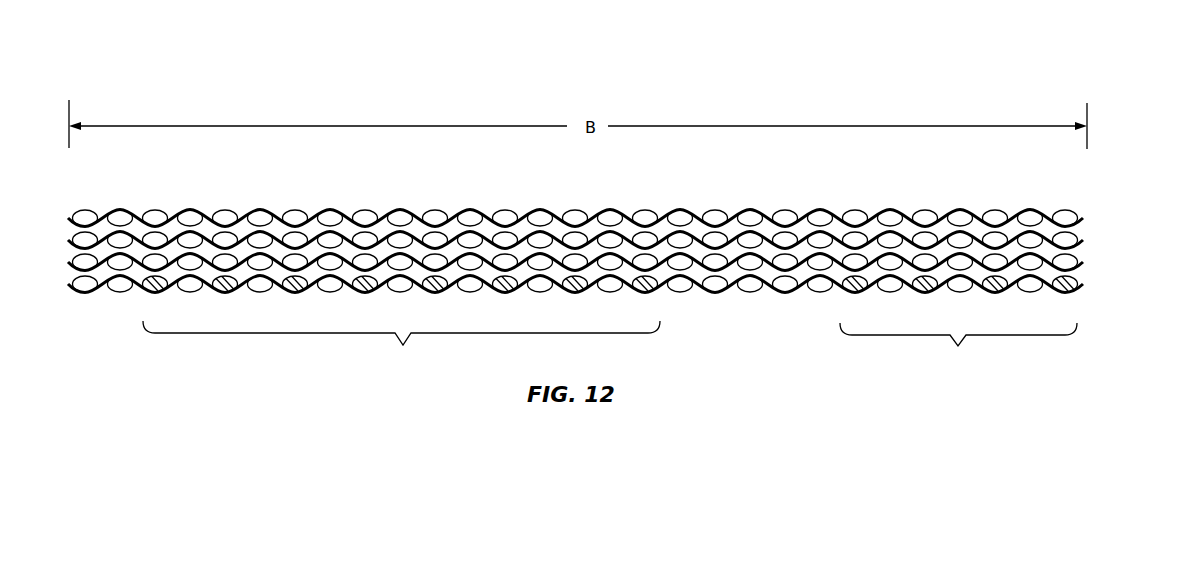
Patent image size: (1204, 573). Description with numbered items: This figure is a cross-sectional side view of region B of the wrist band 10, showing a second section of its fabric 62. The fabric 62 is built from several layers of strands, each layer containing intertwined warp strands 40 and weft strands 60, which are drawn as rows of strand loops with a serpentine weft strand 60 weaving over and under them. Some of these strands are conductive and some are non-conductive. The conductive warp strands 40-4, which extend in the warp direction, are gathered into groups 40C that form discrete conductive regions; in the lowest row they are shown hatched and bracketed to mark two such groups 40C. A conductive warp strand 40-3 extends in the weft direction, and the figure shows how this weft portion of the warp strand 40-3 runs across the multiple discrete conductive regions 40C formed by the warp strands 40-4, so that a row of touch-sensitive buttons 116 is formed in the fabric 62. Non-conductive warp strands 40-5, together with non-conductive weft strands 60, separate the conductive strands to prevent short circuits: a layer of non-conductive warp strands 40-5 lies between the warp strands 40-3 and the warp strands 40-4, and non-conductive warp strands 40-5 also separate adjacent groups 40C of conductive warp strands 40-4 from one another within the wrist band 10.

The wrist band 10 is at (826, 74).
The warp strands 40 is at (783, 216).
The warp strands extending in weft direction 40-3 is at (623, 236).
The conductive warp strands 40-4 is at (1078, 283).
The non-conductive warp strands 40-5 is at (1070, 260).
The groups of conductive warp strands 40C is at (610, 344).
The weft strands 60 is at (832, 210).
The fabric 62 is at (159, 174).
The touch-sensitive buttons 116 is at (470, 184).